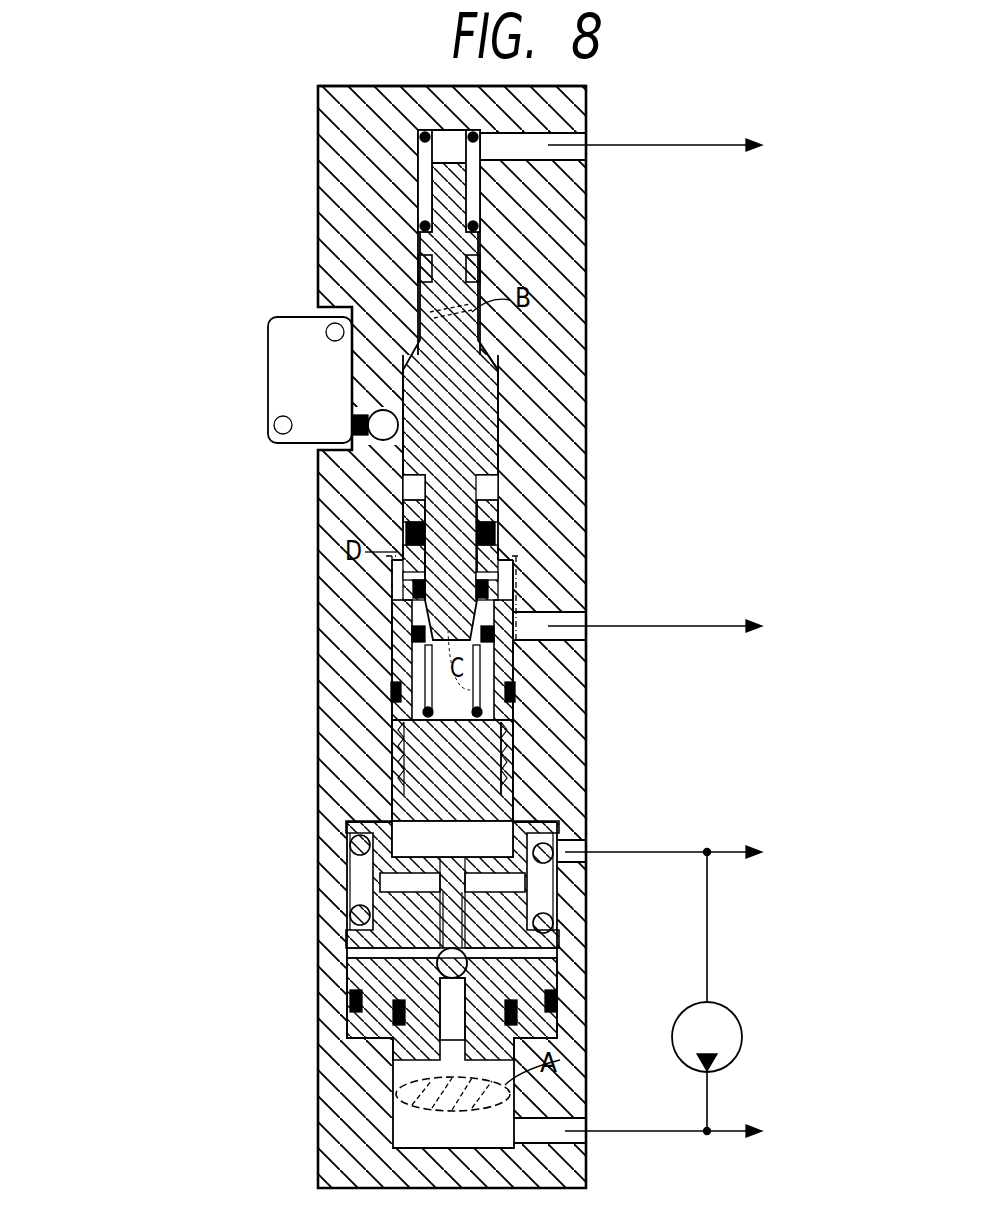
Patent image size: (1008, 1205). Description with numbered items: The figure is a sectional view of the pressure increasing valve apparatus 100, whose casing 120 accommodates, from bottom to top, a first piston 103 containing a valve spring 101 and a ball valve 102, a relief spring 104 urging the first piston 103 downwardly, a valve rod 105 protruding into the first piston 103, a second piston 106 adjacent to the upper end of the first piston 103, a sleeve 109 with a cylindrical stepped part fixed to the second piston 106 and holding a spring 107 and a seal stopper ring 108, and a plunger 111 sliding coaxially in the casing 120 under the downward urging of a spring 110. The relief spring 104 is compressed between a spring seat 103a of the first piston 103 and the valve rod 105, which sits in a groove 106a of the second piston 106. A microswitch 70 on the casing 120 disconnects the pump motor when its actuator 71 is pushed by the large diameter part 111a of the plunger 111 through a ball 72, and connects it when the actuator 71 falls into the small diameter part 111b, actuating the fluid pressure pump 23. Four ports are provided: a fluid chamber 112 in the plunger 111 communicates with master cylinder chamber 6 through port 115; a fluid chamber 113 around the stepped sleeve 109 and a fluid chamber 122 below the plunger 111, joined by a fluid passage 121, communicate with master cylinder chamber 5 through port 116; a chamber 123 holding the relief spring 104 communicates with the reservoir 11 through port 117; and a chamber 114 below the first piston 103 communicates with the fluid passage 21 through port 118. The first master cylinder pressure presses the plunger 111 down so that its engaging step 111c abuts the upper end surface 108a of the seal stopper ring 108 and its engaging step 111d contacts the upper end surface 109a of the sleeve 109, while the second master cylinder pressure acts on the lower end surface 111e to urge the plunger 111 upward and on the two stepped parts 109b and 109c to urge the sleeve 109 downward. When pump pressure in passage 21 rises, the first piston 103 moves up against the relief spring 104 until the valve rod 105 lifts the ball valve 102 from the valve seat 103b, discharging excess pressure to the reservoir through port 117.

The fluid chamber 5 is at (784, 642).
The fluid chamber 6 is at (784, 162).
The reservoir 11 is at (677, 920).
The fluid passage 21 is at (677, 1109).
The fluid pressure pump 23 is at (733, 1014).
The switch 70 is at (268, 328).
The actuator 71 is at (352, 432).
The ball 72 is at (398, 445).
The pressure increasing valve apparatus 100 is at (603, 345).
The valve spring 101 is at (350, 1022).
The ball valve 102 is at (348, 986).
The first piston 103 is at (505, 960).
The spring seat 103a is at (352, 942).
The valve seat 103b is at (352, 958).
The relief spring 104 is at (347, 846).
The valve rod 105 is at (470, 958).
The second piston 106 is at (428, 760).
The groove 106a is at (512, 827).
The spring 107 is at (515, 768).
The seal stopper ring 108 is at (515, 578).
The upper end surface 108a is at (497, 531).
The sleeve 109 is at (408, 718).
The upper end surface 109a is at (500, 484).
The stepped part 109b is at (410, 608).
The stepped part 109c is at (412, 634).
The spring 110 is at (445, 141).
The plunger 111 is at (482, 386).
The large diameter part 111a is at (400, 404).
The small diameter part 111b is at (412, 352).
The engaging step 111c is at (410, 587).
The engaging step 111d is at (408, 478).
The lower end surface 111e is at (405, 692).
The fluid chamber 112 is at (420, 132).
The fluid chamber 113 is at (522, 594).
The chamber 114 is at (395, 1113).
The port 115 is at (586, 170).
The port 116 is at (588, 642).
The port 117 is at (573, 851).
The port 118 is at (578, 1118).
The casing 120 is at (565, 415).
The fluid passage 121 is at (560, 655).
The fluid chamber 122 is at (520, 728).
The chamber 123 is at (557, 889).